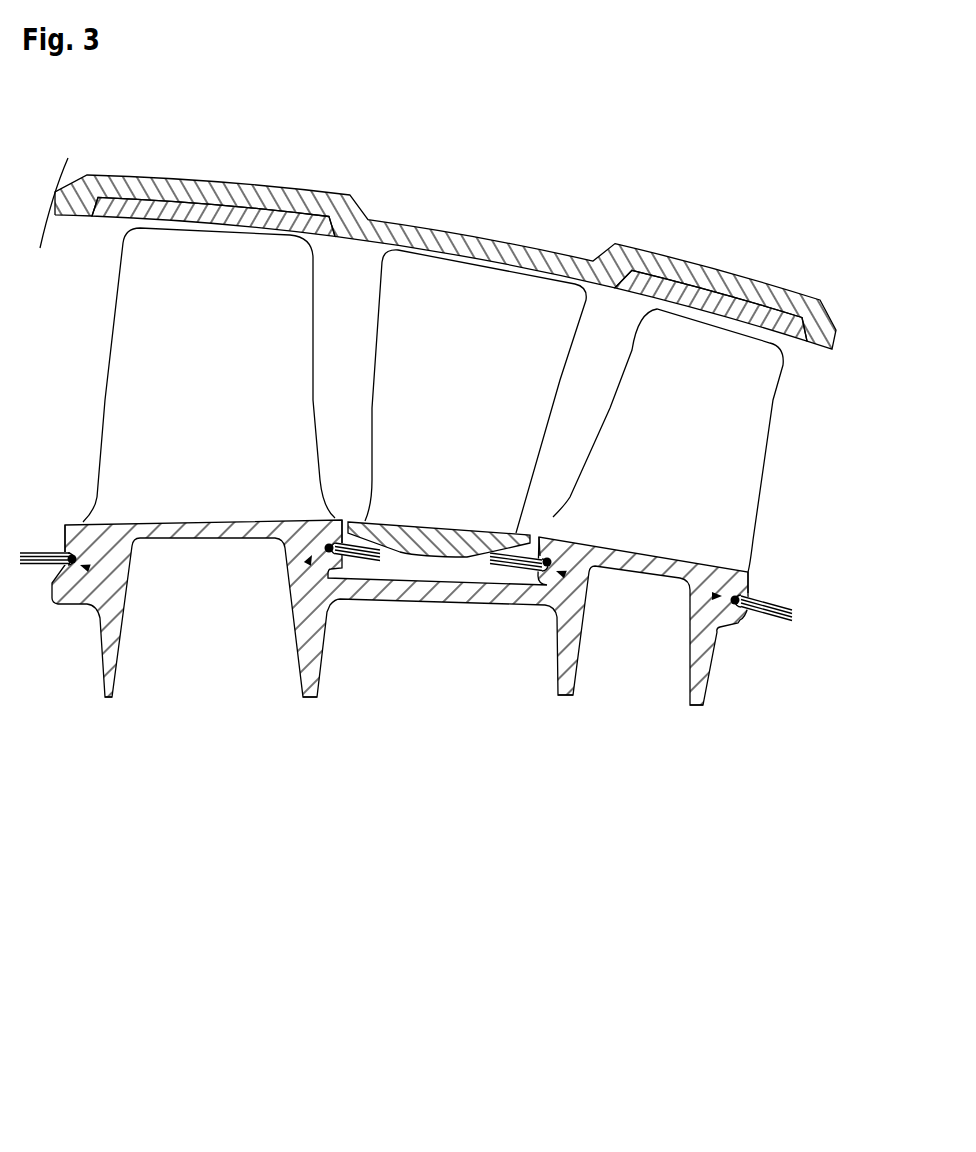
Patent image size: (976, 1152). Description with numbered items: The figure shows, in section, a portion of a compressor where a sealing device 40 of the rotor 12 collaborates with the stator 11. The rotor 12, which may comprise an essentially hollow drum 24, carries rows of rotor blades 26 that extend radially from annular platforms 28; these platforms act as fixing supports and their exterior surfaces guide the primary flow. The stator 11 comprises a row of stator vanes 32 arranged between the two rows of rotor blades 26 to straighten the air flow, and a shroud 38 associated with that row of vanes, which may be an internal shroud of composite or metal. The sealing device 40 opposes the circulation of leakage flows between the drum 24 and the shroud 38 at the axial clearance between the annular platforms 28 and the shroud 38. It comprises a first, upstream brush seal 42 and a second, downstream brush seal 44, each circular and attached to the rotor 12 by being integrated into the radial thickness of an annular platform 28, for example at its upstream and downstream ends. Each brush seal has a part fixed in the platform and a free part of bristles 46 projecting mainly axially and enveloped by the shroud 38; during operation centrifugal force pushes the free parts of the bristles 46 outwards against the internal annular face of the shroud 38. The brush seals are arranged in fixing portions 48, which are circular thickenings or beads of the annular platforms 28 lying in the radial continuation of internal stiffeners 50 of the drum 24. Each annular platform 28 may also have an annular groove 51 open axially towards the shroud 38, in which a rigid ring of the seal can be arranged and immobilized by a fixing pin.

The stator 11 is at (573, 177).
The rotor 12 is at (228, 886).
The drum 24 is at (493, 818).
The rotor blades 26 is at (225, 302).
The annular platform 28 is at (208, 528).
The stator vanes 32 is at (470, 309).
The shroud 38 is at (452, 542).
The sealing device 40 is at (455, 434).
The first brush seal 42 is at (343, 495).
The second brush seal 44 is at (534, 520).
The bristles 46 is at (38, 553).
The fixing portion 48 is at (100, 545).
The internal stiffener 50 is at (112, 699).
The annular groove 51 is at (83, 567).